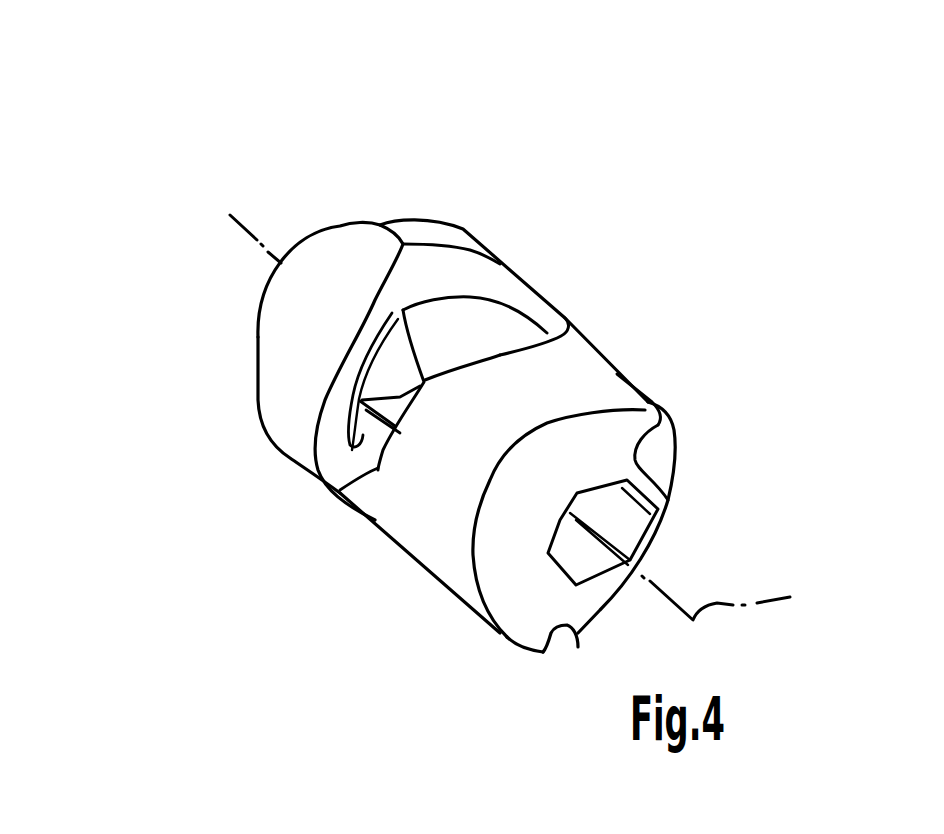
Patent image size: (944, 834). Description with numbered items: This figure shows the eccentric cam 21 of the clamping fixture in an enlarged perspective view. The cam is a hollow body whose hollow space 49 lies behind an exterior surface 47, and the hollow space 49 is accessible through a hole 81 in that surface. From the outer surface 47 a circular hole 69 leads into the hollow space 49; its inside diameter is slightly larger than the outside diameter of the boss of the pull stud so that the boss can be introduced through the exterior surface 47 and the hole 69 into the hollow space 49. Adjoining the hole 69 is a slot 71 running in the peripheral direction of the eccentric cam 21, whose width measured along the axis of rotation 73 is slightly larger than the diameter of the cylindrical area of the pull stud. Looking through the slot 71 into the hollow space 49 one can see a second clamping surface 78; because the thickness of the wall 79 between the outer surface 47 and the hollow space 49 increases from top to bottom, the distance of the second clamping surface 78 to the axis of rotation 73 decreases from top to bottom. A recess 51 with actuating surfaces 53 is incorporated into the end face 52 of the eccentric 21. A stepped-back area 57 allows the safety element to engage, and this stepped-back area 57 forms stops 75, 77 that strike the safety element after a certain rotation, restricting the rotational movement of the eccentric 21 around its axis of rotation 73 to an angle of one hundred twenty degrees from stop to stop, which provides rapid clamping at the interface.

The eccentric cam 21 is at (497, 138).
The exterior surface 47 is at (460, 240).
The hollow space 49 is at (403, 313).
The recess 51 is at (542, 566).
The end face 52 is at (523, 620).
The actuating surfaces 53 is at (620, 527).
The stepped-back area 57 is at (657, 452).
The circular hole 69 is at (553, 311).
The slot 71 is at (307, 418).
The axis of rotation 73 is at (528, 417).
The stop 75 is at (578, 647).
The stop 77 is at (663, 417).
The second clamping surface 78 is at (423, 380).
The wall 79 is at (338, 382).
The hole 81 is at (510, 268).